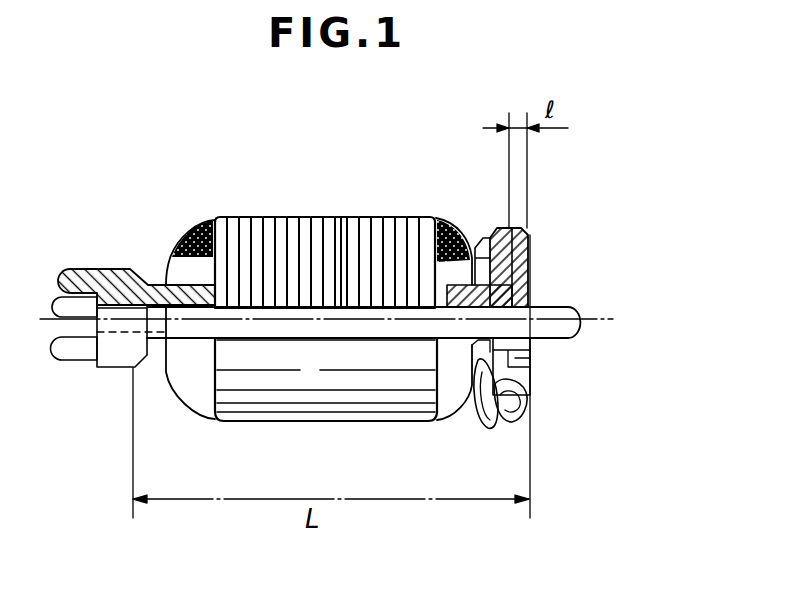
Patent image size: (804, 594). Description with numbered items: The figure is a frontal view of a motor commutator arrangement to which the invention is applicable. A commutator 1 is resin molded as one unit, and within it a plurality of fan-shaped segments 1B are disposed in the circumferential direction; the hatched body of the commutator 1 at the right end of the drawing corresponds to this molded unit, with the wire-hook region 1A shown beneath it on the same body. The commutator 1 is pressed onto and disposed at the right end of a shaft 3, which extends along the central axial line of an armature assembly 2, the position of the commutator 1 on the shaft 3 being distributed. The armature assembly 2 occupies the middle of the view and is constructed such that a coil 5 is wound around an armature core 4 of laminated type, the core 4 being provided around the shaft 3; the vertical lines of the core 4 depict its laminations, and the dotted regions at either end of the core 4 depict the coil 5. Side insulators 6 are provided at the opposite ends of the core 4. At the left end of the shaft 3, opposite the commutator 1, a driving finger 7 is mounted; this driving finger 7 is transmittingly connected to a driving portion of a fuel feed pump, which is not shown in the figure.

The commutator 1 is at (532, 240).
The commutator riser / wire hook 1A is at (530, 373).
The fan-shaped segments 1B is at (532, 250).
The armature assembly 2 is at (383, 208).
The shaft 3 is at (550, 310).
The armature core 4 is at (353, 238).
The coil 5 is at (452, 230).
The side insulators 6 is at (197, 228).
The driving finger 7 is at (117, 268).